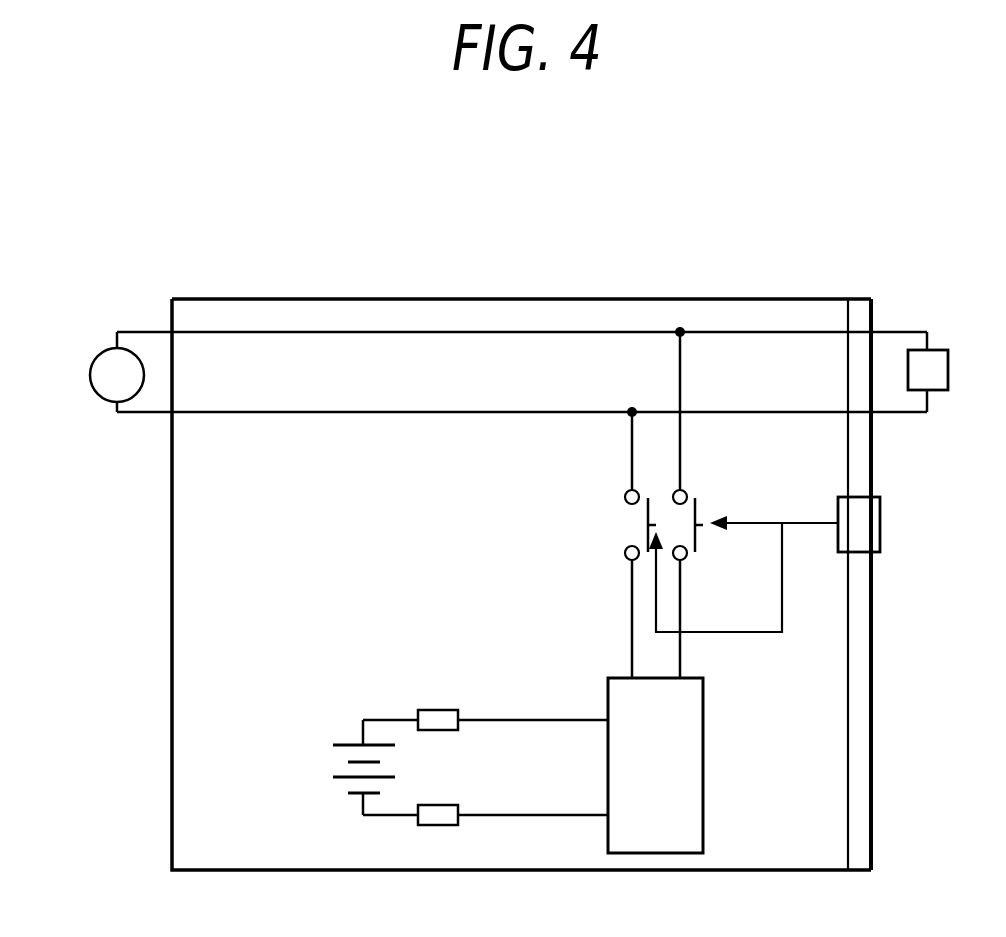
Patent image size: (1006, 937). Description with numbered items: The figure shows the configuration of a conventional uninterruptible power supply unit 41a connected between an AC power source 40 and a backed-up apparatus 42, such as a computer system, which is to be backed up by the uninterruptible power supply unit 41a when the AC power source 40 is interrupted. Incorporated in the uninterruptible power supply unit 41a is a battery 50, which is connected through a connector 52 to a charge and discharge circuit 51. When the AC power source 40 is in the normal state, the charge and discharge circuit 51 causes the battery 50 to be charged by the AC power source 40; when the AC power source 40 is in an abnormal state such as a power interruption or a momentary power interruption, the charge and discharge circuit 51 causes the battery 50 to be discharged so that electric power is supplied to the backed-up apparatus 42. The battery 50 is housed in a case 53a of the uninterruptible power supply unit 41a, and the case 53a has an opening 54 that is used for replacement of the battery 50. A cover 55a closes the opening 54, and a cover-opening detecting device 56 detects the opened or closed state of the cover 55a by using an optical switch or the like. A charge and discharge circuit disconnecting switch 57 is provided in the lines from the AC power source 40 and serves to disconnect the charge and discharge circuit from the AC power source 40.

The AC power source 40 is at (96, 356).
The uninterruptible power supply unit 41a is at (402, 228).
The backed-up apparatus 42 is at (937, 349).
The battery 50 is at (345, 745).
The charge and discharge circuit 51 is at (704, 760).
The connector 52 is at (438, 726).
The case 53a is at (518, 297).
The opening 54 is at (848, 297).
The cover 55a is at (873, 655).
The cover-opening detecting device 56 is at (881, 520).
The charge and discharge circuit disconnecting switch 57 is at (700, 510).